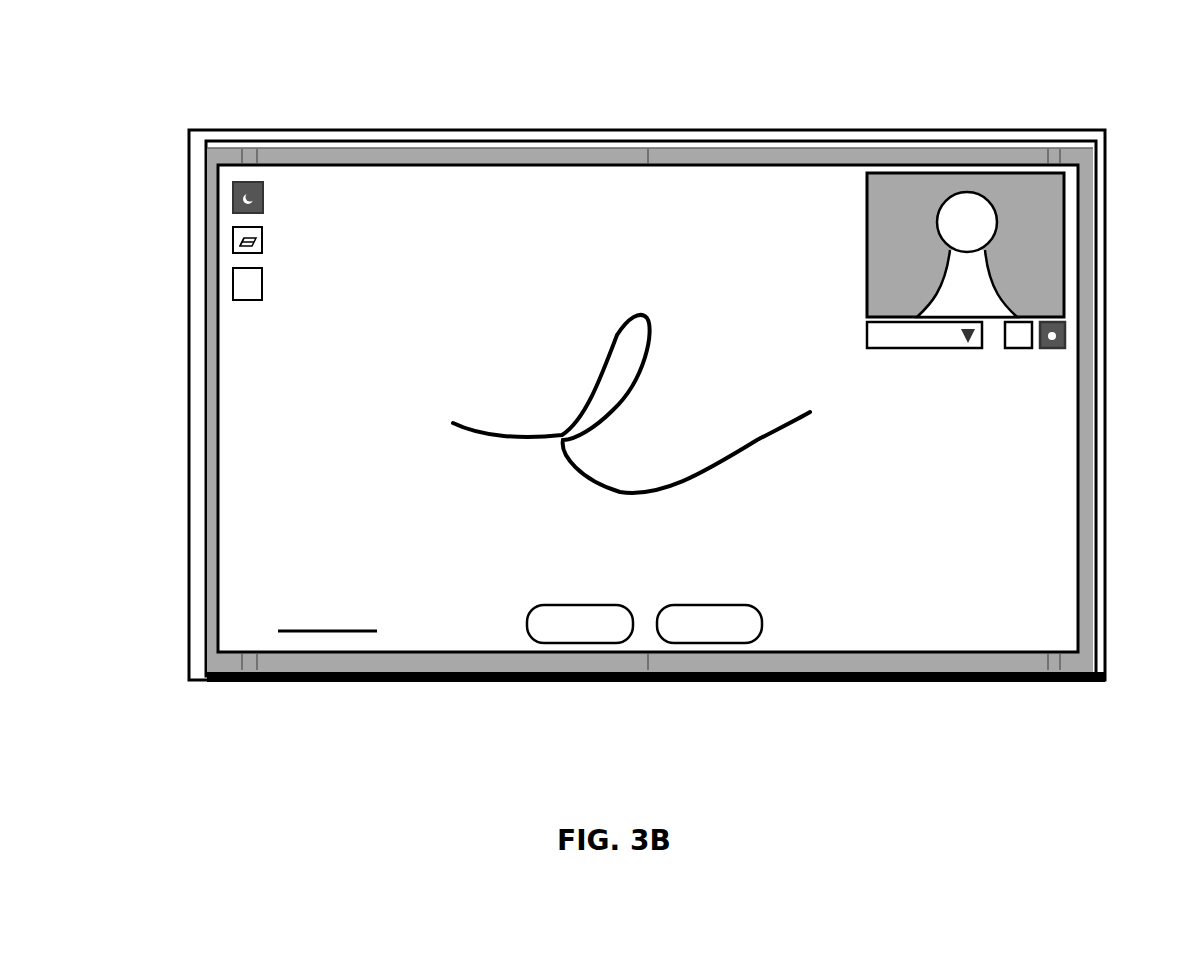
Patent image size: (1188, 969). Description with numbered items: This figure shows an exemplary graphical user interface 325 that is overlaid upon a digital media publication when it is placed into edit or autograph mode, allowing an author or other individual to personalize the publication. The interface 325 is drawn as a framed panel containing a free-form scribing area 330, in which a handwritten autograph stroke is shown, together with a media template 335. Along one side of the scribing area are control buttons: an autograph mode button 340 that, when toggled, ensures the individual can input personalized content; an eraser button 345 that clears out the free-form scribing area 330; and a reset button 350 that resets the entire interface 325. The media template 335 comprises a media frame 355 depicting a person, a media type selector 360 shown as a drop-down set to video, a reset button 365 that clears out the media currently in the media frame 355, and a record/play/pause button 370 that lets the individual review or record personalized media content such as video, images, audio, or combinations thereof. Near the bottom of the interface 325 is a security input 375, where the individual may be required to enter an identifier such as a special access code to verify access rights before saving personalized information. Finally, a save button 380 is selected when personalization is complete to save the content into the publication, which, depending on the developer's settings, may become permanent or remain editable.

The interface 325 is at (211, 76).
The free-form scribing area 330 is at (548, 272).
The media template 335 is at (1071, 105).
The autograph mode button 340 is at (250, 185).
The eraser button 345 is at (258, 235).
The reset button 350 is at (258, 272).
The media frame 355 is at (877, 197).
The media type selector 360 is at (867, 335).
The reset button 365 is at (1028, 342).
The record/play/pause button 370 is at (1052, 333).
The security input 375 is at (213, 624).
The save button 380 is at (512, 582).